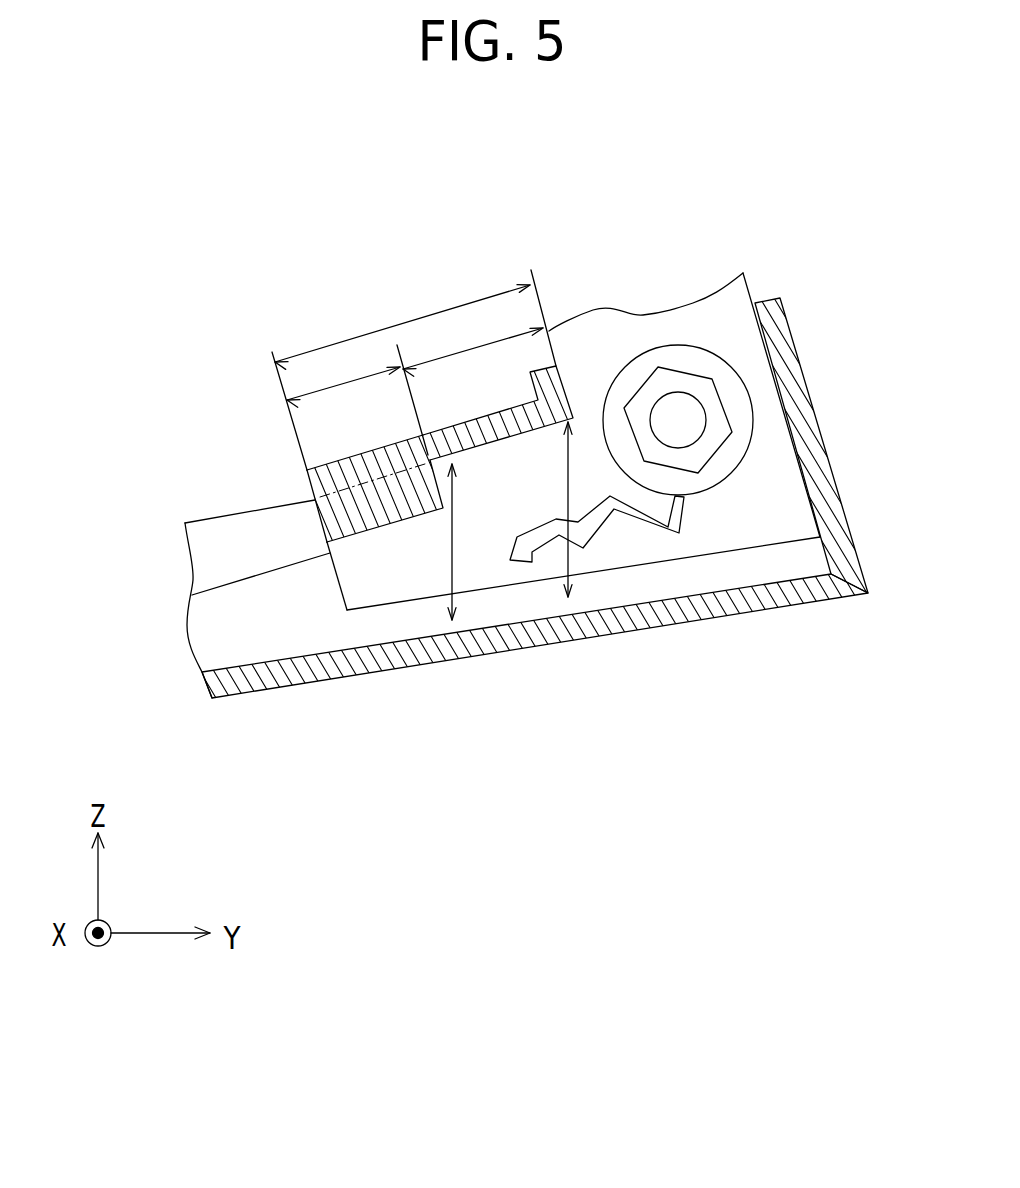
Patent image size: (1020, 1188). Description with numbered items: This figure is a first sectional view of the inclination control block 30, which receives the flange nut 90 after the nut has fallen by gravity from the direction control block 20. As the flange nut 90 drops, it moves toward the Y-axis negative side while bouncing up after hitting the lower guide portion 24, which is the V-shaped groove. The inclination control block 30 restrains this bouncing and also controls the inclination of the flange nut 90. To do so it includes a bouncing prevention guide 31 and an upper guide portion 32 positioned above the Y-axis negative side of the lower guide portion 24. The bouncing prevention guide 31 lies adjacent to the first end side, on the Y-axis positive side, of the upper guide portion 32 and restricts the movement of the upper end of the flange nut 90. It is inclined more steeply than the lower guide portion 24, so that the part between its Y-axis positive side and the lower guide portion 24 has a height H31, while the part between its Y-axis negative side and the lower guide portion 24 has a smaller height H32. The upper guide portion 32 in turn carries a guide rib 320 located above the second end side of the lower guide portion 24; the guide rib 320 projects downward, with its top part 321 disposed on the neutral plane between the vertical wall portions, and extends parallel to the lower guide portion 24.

The direction control block 20 is at (750, 292).
The lower guide portion 24 is at (706, 574).
The inclination control block 30 is at (408, 323).
The bouncing prevention guide 31 is at (497, 338).
The upper guide portion 32 is at (335, 386).
The guide rib 320 is at (320, 519).
The top part 321 is at (366, 548).
The flange nut 90 is at (752, 393).
The height H31 is at (545, 509).
The height H32 is at (427, 542).